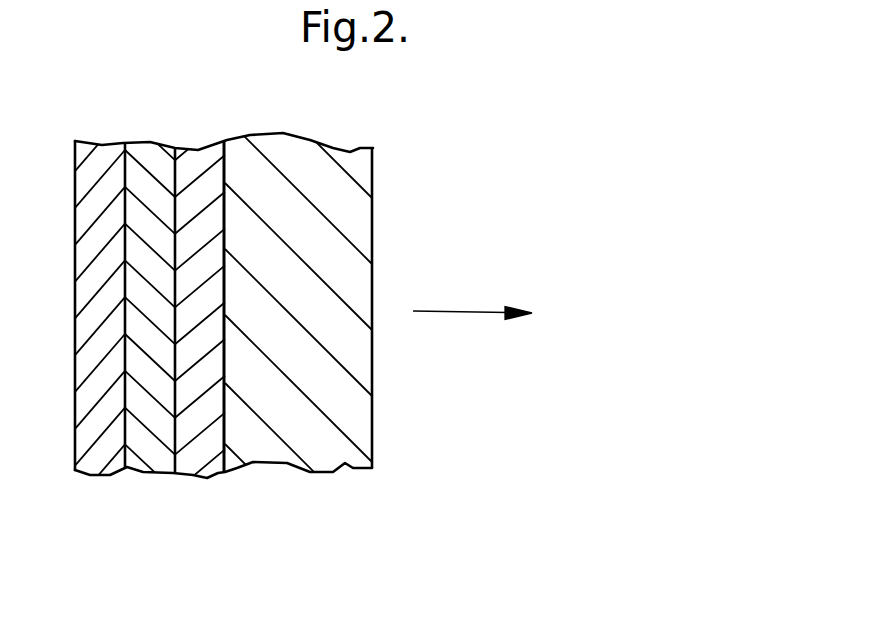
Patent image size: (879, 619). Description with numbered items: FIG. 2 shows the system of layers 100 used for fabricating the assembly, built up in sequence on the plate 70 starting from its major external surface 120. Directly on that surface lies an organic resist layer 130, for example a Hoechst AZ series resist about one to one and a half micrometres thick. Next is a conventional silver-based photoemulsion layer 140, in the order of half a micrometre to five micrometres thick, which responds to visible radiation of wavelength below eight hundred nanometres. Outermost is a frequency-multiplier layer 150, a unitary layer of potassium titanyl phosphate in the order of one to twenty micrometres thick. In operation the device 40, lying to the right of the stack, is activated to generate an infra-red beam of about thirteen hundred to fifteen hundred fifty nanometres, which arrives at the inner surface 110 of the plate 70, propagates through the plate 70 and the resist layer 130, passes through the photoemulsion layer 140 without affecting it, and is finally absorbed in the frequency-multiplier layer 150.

The system of layers 100 is at (404, 130).
The frequency-multiplier layer 150 is at (98, 152).
The photoemulsion layer 140 is at (150, 455).
The organic resist layer 130 is at (198, 160).
The major external surface of the plate 120 is at (207, 443).
The plate 70 is at (303, 145).
The inner surface of the plate 110 is at (393, 242).
The device 40 is at (595, 312).